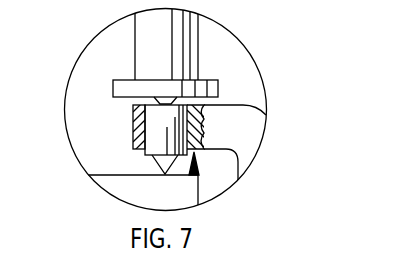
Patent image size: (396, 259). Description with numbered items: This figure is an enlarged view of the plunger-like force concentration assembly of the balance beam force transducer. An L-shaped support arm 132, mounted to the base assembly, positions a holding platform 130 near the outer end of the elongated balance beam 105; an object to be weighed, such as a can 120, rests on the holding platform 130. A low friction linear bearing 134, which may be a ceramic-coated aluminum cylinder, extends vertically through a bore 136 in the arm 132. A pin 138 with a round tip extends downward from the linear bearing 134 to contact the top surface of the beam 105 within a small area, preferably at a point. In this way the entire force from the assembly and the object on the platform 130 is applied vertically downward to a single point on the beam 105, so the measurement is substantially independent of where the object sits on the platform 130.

The elongated balance beam 105 is at (123, 187).
The can 120 is at (198, 43).
The holding platform 130 is at (218, 88).
The L-shaped support arm 132 is at (247, 122).
The low friction linear bearing 134 is at (153, 127).
The bore 136 is at (196, 158).
The pin 138 is at (163, 172).